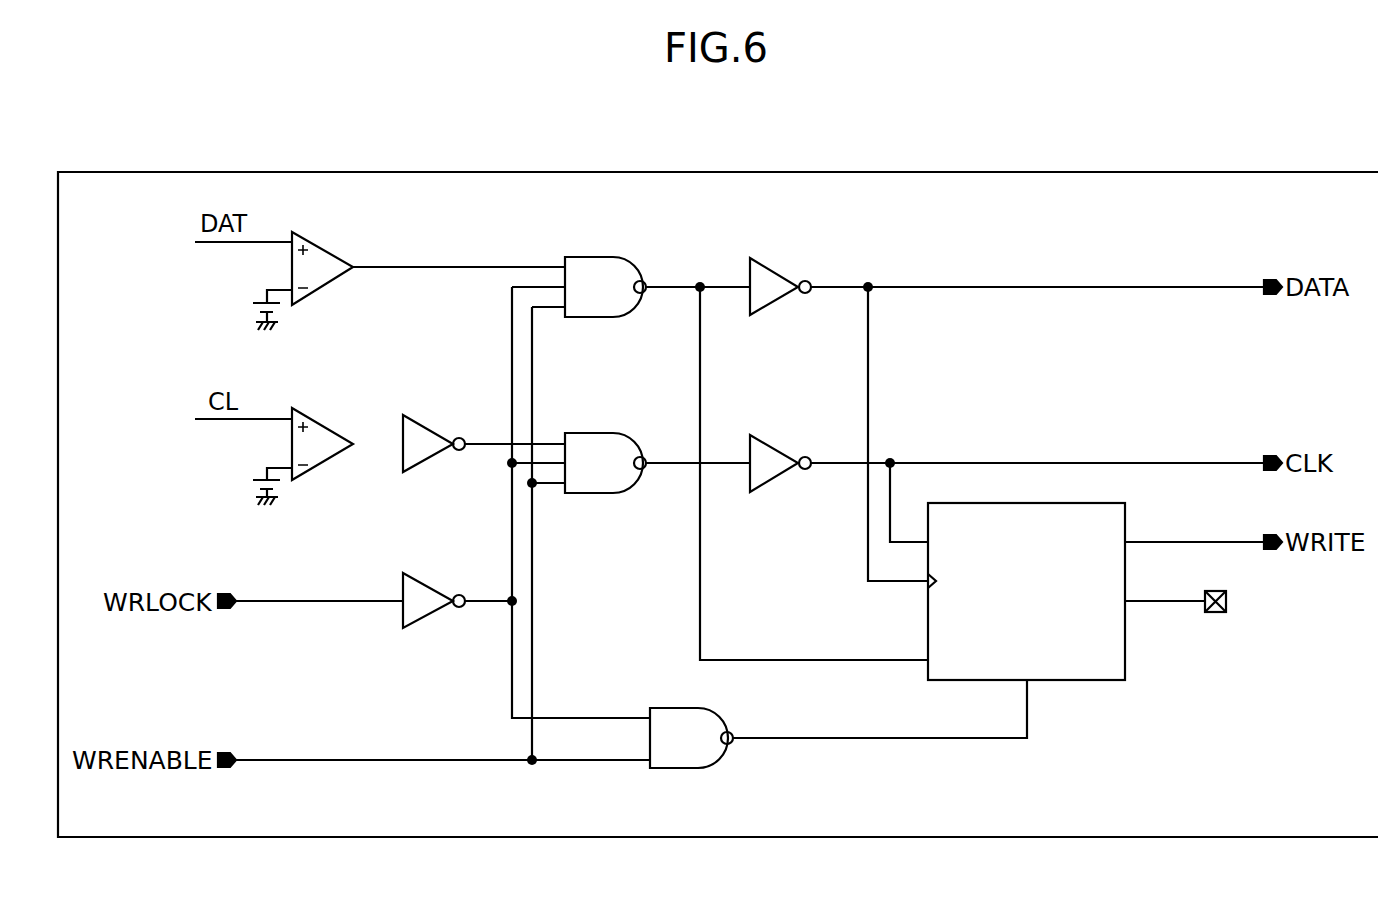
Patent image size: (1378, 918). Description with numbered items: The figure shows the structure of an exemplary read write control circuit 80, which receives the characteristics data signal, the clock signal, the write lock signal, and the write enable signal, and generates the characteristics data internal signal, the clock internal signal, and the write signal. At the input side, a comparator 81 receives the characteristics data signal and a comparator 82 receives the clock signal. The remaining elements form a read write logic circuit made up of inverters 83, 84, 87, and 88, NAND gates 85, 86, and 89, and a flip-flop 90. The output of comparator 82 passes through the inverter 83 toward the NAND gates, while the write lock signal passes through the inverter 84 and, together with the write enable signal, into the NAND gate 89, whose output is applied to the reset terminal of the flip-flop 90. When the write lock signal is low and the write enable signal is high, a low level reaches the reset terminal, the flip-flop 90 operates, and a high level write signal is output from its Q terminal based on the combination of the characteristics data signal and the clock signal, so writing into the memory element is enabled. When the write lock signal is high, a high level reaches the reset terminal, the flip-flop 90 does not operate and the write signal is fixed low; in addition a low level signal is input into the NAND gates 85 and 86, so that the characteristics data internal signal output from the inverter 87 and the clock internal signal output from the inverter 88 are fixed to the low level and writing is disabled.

The read write control circuit 80 is at (1268, 172).
The comparator 81 is at (313, 243).
The comparator 82 is at (313, 420).
The inverter 83 is at (430, 428).
The inverter 84 is at (430, 585).
The NAND gate 85 is at (642, 252).
The NAND gate 86 is at (642, 428).
The inverter 87 is at (780, 270).
The inverter 88 is at (780, 447).
The NAND gate 89 is at (710, 710).
The flip-flop 90 is at (1127, 515).